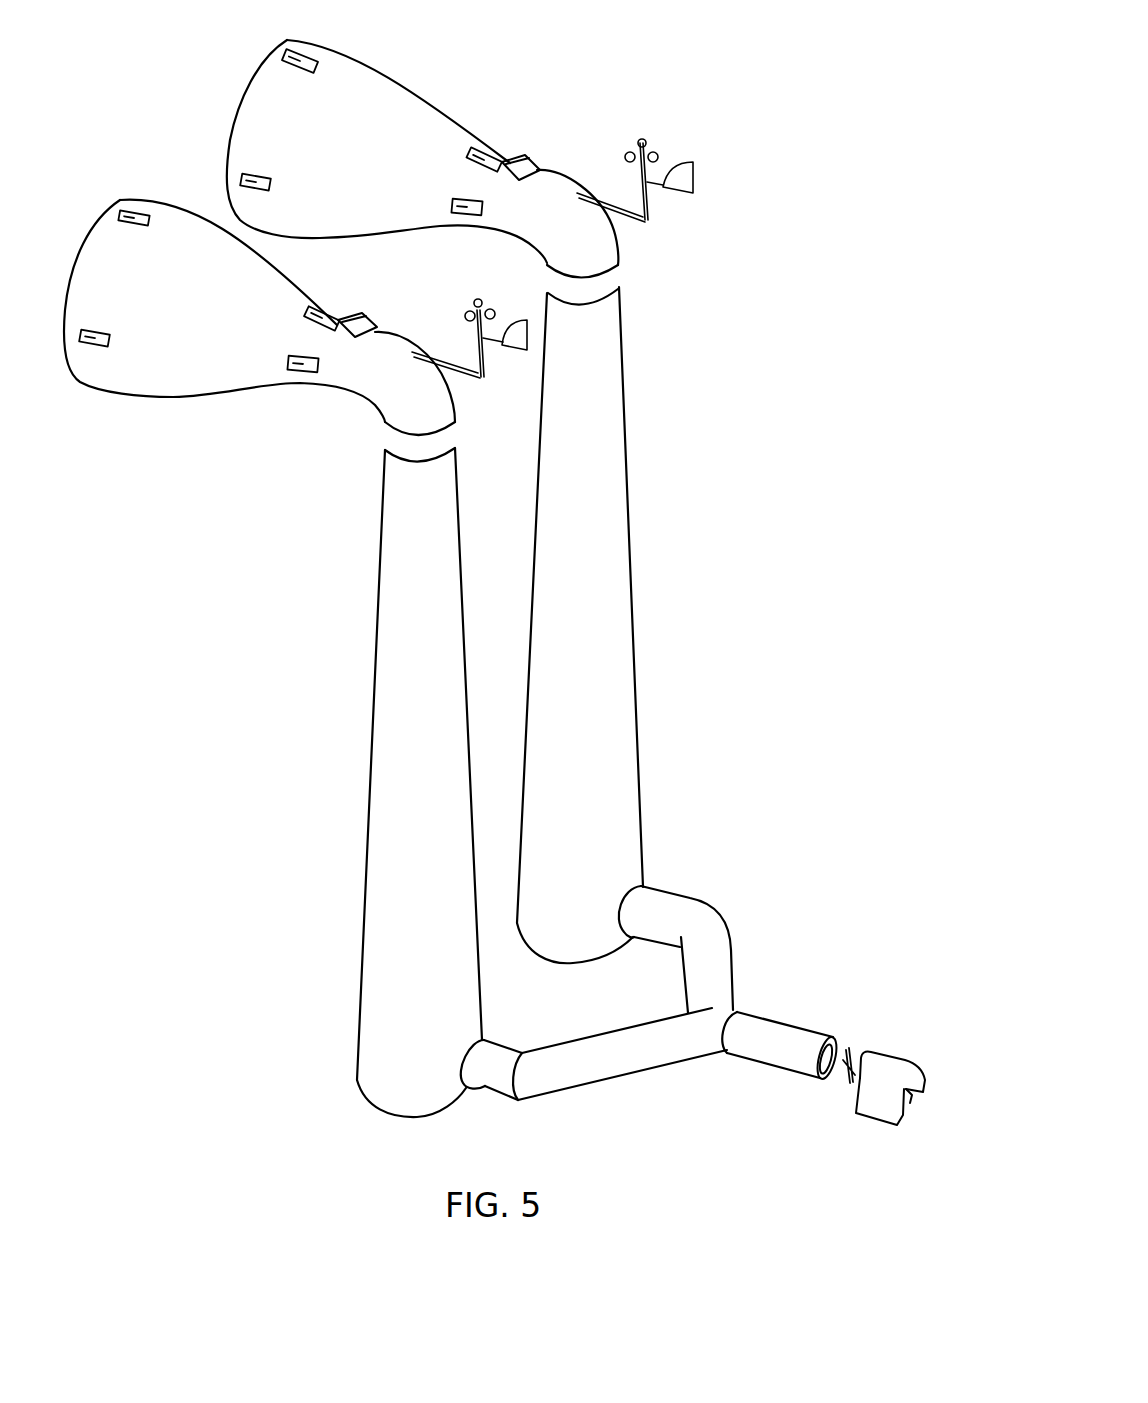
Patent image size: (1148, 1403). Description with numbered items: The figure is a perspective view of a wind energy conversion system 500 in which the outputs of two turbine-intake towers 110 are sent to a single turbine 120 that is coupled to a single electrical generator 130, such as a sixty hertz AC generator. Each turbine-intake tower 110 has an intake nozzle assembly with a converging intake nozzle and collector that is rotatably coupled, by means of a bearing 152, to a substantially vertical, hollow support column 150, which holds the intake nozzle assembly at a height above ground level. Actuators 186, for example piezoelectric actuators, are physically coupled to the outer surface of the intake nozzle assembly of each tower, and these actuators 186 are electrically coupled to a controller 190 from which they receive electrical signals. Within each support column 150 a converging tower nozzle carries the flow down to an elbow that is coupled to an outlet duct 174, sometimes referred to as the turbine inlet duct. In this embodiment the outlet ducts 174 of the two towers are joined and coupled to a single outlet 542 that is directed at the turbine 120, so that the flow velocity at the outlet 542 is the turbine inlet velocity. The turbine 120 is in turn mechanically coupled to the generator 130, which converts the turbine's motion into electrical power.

The wind energy conversion system 500 is at (805, 98).
The turbine-intake tower 110 is at (600, 100).
The actuators 186 is at (285, 58).
The controller 190 is at (370, 330).
The bearing 152 is at (442, 438).
The support column 150 is at (373, 717).
The outlet duct 174 is at (482, 1077).
The outlet 542 is at (827, 1063).
The turbine 120 is at (848, 1067).
The electrical generator 130 is at (885, 1075).